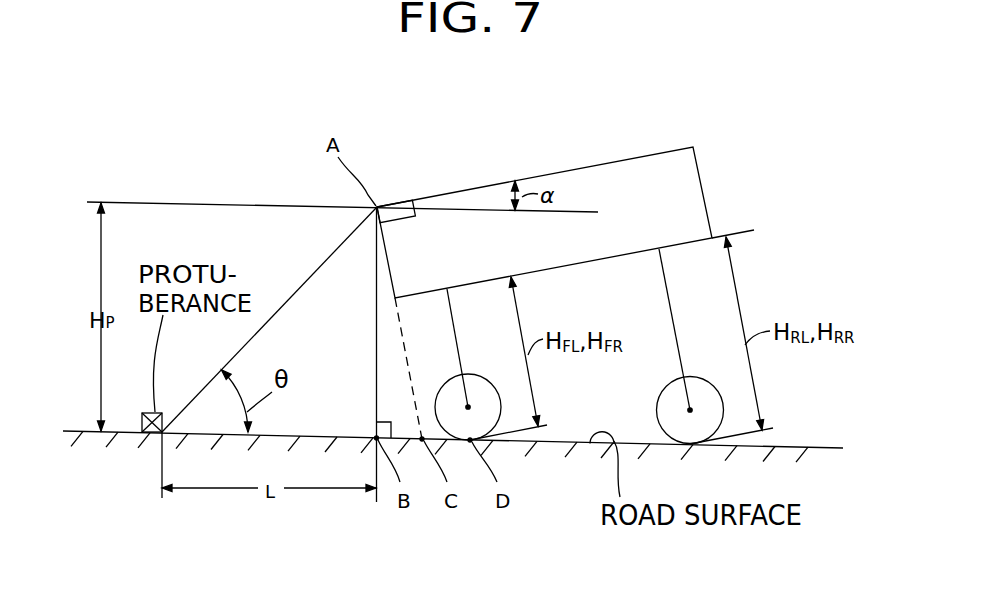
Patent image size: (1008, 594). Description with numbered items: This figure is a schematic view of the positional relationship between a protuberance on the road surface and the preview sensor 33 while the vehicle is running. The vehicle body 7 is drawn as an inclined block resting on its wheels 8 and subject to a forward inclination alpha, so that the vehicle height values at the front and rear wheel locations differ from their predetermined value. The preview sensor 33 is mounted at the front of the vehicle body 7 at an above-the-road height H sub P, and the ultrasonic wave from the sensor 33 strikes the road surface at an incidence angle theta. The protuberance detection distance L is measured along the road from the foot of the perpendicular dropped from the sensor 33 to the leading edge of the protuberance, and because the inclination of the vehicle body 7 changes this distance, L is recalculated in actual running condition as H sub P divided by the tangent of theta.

The vehicle body 7 is at (632, 190).
The wheel 8 is at (478, 387).
The preview sensor 33 is at (397, 212).